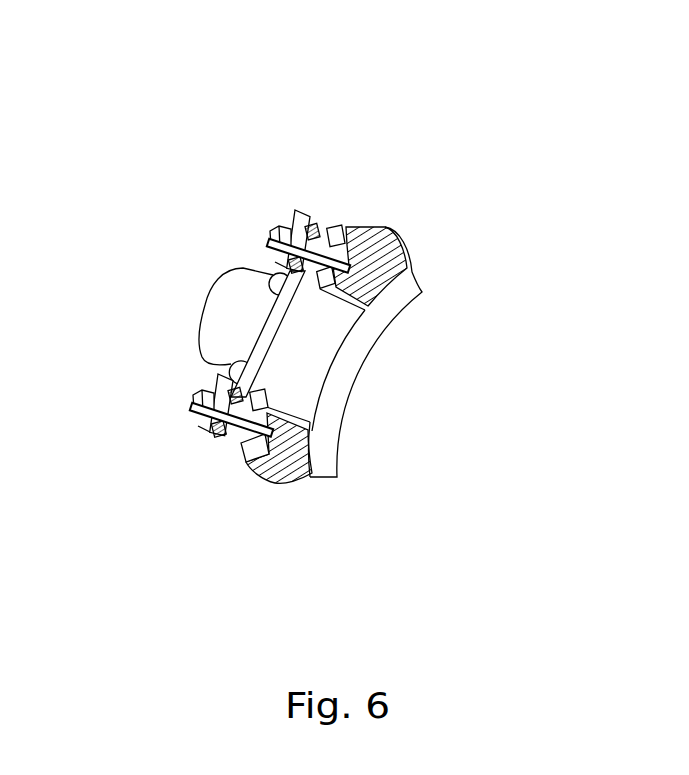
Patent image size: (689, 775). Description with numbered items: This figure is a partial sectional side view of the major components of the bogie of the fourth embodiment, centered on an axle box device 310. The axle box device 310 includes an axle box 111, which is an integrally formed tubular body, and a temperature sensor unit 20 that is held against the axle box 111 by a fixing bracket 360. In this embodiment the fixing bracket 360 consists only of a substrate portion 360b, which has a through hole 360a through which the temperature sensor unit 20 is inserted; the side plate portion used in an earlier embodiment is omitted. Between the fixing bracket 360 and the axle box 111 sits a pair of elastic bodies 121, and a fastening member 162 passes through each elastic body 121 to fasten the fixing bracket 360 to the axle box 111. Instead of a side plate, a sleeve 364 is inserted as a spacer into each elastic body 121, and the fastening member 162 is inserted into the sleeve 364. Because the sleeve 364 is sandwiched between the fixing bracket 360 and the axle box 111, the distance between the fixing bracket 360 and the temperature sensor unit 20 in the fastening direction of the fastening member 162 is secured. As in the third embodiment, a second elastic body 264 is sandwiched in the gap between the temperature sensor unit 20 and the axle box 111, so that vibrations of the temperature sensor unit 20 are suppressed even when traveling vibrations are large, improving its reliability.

The axle box device 310 is at (467, 122).
The axle box 111 is at (277, 483).
The temperature sensor unit 20 is at (197, 301).
The fixing bracket 360 is at (208, 392).
The through hole 360a is at (268, 263).
The substrate portion 360b is at (286, 256).
The second elastic body 264 is at (343, 226).
The sleeve 364 is at (318, 233).
The fastening member 162 is at (276, 232).
The elastic body 121 is at (316, 230).